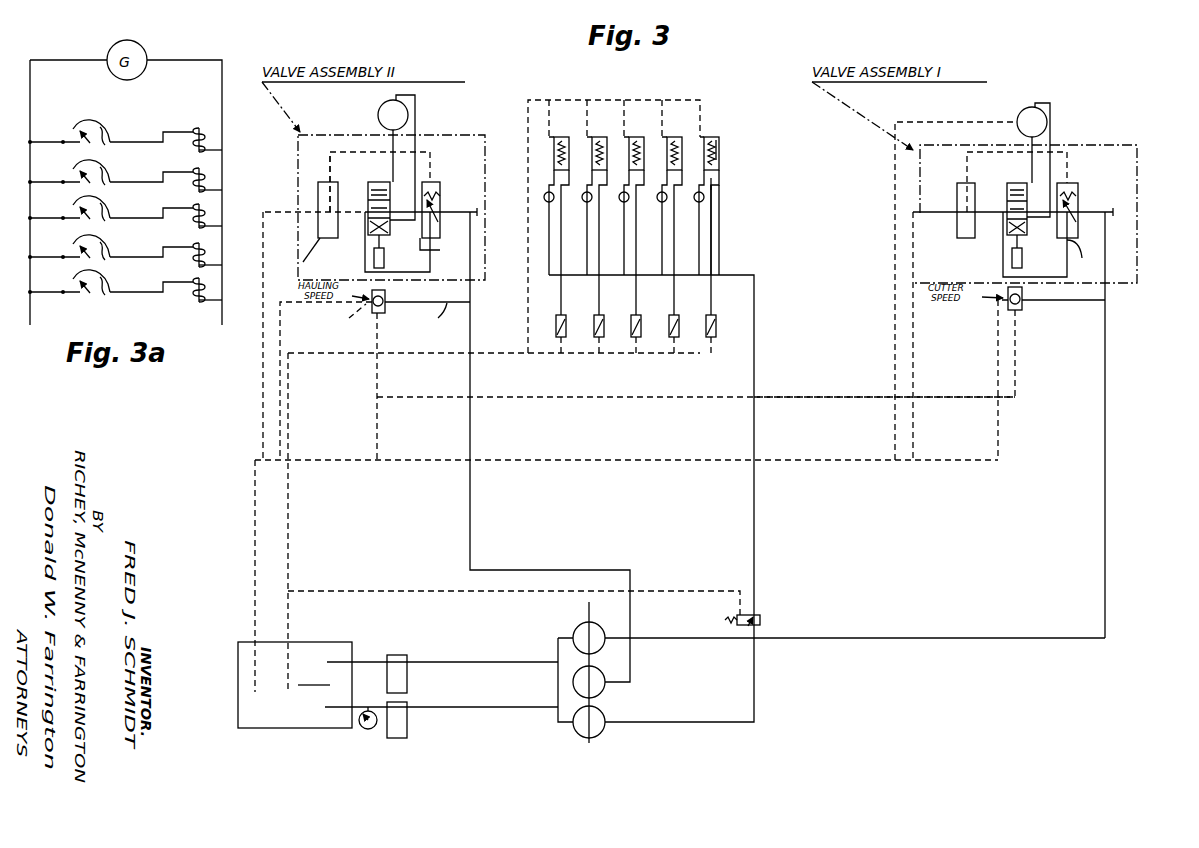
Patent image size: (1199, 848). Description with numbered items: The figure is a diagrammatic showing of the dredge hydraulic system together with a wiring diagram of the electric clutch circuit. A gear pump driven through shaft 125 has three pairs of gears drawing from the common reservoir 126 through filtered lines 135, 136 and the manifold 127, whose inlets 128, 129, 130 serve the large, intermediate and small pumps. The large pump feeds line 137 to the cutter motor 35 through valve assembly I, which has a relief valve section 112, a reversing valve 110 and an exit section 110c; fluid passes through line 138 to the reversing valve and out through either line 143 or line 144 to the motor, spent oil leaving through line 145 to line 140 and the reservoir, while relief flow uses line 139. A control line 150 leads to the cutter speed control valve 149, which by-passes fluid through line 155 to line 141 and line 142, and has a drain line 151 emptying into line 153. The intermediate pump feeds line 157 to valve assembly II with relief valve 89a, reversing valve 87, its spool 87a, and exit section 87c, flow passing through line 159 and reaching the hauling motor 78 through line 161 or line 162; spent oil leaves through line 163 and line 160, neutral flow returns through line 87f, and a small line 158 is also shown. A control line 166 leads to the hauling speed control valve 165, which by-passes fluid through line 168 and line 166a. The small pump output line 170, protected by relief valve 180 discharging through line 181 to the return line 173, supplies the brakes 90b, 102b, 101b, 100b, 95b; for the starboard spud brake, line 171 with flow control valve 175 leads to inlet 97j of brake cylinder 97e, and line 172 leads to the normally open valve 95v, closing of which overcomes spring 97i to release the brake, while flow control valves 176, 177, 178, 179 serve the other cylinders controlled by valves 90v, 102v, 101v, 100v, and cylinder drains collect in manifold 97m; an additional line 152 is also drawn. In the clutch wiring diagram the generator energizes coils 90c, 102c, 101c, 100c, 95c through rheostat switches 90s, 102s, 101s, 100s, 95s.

In FIG. 3, the cutter motor 35 is at (1028, 107).
In FIG. 3, the hauling machinery motor 78 is at (385, 108).
In FIG. 3, the reversing valve 87 is at (368, 222).
In FIG. 3, the valve spool 87a is at (368, 206).
In FIG. 3, the exit section 87c is at (316, 258).
In FIG. 3, the line 87f is at (262, 340).
In FIG. 3, the relief valve section 89a is at (442, 190).
In FIG. 3, the brake 90b is at (566, 135).
In FIG. 3, the hydraulic brake 102b is at (604, 135).
In FIG. 3, the hydraulic brake 101b is at (641, 135).
In FIG. 3, the brake 100b is at (679, 135).
In FIG. 3, the brake 95b is at (716, 135).
In FIG. 3A, the electric clutch 90c is at (205, 134).
In FIG. 3A, the electric clutch coil 102c is at (205, 174).
In FIG. 3A, the electric clutch coil 101c is at (205, 210).
In FIG. 3A, the clutch 100c is at (205, 249).
In FIG. 3A, the electric clutch assembly 95c is at (205, 284).
In FIG. 3A, the manual switch 90s is at (110, 150).
In FIG. 3A, the clutch switch 102s is at (110, 190).
In FIG. 3A, the ladder switch 101s is at (110, 226).
In FIG. 3A, the starboard swing switch 100s is at (110, 265).
In FIG. 3A, the manual lever 95s is at (110, 300).
In FIG. 3, the hydraulic brake valve 90v is at (567, 315).
In FIG. 3, the brake valve 102v is at (623, 300).
In FIG. 3, the valve 101v is at (660, 300).
In FIG. 3, the valve 100v is at (700, 303).
In FIG. 3, the valve 95v is at (717, 315).
In FIG. 3, the brake cylinder 97e is at (722, 153).
In FIG. 3, the spring 97i is at (720, 140).
In FIG. 3, the brake cylinder inlet 97j is at (714, 180).
In FIG. 3, the drain line manifold 97m is at (524, 128).
In FIG. 3, the reversing valve 110 is at (1003, 218).
In FIG. 3, the exit section 110c is at (960, 238).
In FIG. 3, the relief valve section 112 is at (1080, 205).
In FIG. 3, the driven shaft 125 is at (586, 607).
In FIG. 3, the reservoir 126 is at (295, 685).
In FIG. 3, the manifold 127 is at (557, 675).
In FIG. 3, the inlet 128 is at (573, 636).
In FIG. 3, the inlet 129 is at (570, 680).
In FIG. 3, the inlet 130 is at (573, 724).
In FIG. 3, the line 135 is at (410, 660).
In FIG. 3, the line 136 is at (410, 705).
In FIG. 3, the line 137 is at (1115, 245).
In FIG. 3, the line 138 is at (1082, 257).
In FIG. 3, the line 139 is at (1070, 157).
In FIG. 3, the line 140 is at (935, 210).
In FIG. 3, the line 141 is at (335, 462).
In FIG. 3, the line 142 is at (253, 523).
In FIG. 3, the line 143 is at (1018, 183).
In FIG. 3, the line 144 is at (1052, 120).
In FIG. 3, the line 145 is at (1000, 195).
In FIG. 3, the cutter speed control valve 149 is at (1026, 305).
In FIG. 3, the control line 150 is at (1060, 292).
In FIG. 3, the drain line 151 is at (1017, 355).
In FIG. 3, the line 152 is at (953, 397).
In FIG. 3, the drain line 153 is at (380, 338).
In FIG. 3, the line 155 is at (996, 335).
In FIG. 3, the line 157 is at (472, 230).
In FIG. 3, the line 158 is at (443, 249).
In FIG. 3, the line 159 is at (335, 150).
In FIG. 3, the line 160 is at (320, 182).
In FIG. 3, the line 161 is at (391, 150).
In FIG. 3, the line 162 is at (418, 124).
In FIG. 3, the line 163 is at (380, 182).
In FIG. 3, the hauling speed control valve 165 is at (387, 295).
In FIG. 3, the control line 166 is at (436, 315).
In FIG. 3, the line 166a is at (292, 318).
In FIG. 3, the line 168 is at (347, 321).
In FIG. 3, the output line 170 is at (756, 310).
In FIG. 3, the line 171 is at (705, 248).
In FIG. 3, the line 172 is at (720, 237).
In FIG. 3, the discharge line 173 is at (290, 388).
In FIG. 3, the flow control valve 175 is at (705, 197).
In FIG. 3, the flow control valve 176 is at (658, 202).
In FIG. 3, the flow control valve 177 is at (620, 202).
In FIG. 3, the flow control valve 178 is at (583, 202).
In FIG. 3, the flow control valve 179 is at (545, 202).
In FIG. 3, the pressure relief valve 180 is at (760, 615).
In FIG. 3, the line 181 is at (712, 580).